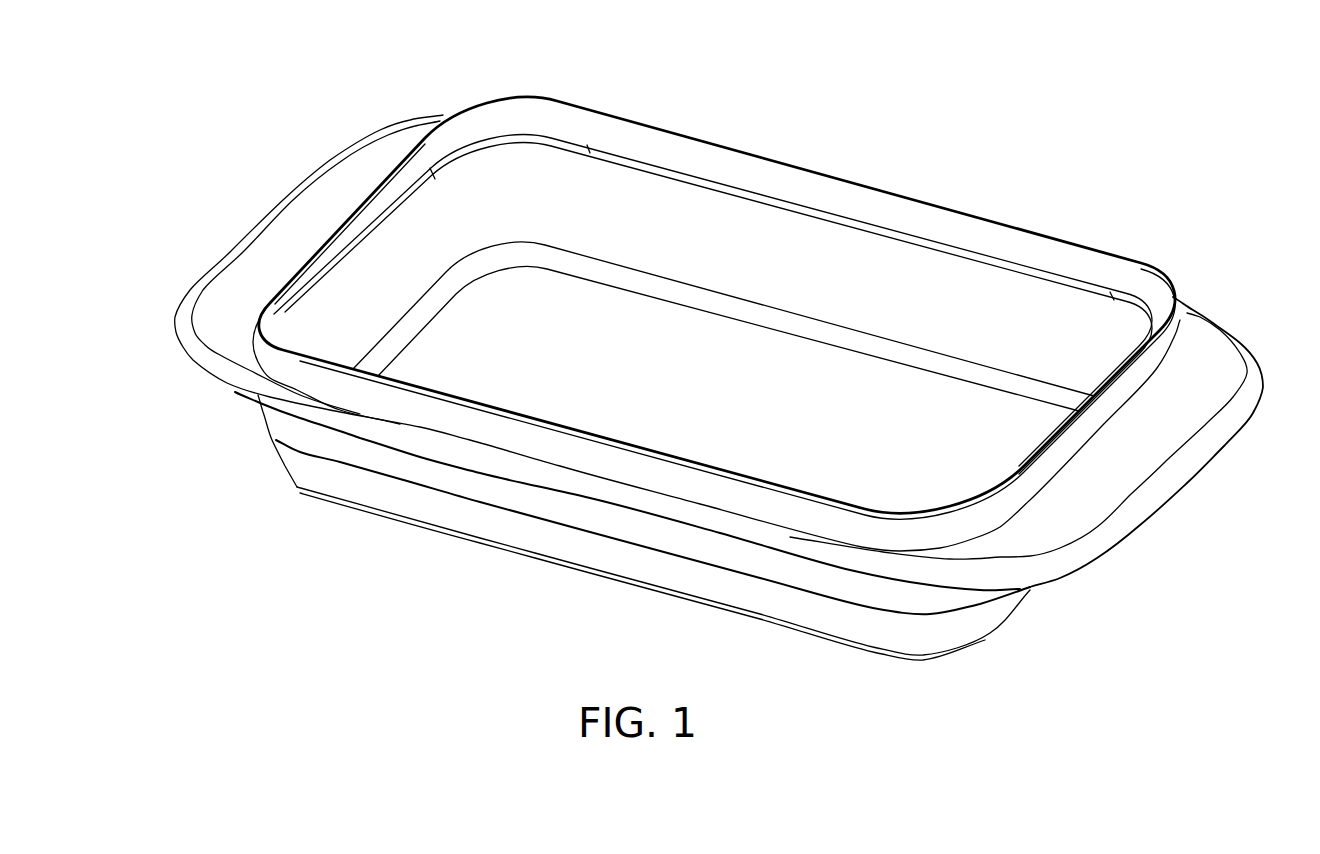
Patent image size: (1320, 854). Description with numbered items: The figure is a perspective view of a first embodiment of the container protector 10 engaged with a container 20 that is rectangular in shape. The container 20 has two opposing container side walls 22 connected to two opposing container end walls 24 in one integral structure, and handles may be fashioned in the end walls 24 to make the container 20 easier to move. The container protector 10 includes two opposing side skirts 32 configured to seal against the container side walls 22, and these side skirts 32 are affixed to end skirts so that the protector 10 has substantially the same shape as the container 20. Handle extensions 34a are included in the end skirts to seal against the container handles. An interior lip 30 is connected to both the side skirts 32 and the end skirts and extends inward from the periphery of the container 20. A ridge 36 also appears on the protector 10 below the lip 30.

The container protector 10 is at (1118, 187).
The container 20 is at (905, 282).
The container side wall 22 is at (397, 500).
The container end wall 24 is at (400, 257).
The interior lip 30 is at (618, 133).
The side skirt 32 is at (577, 517).
The handle extension 34a is at (283, 217).
The ridge 36 is at (370, 430).